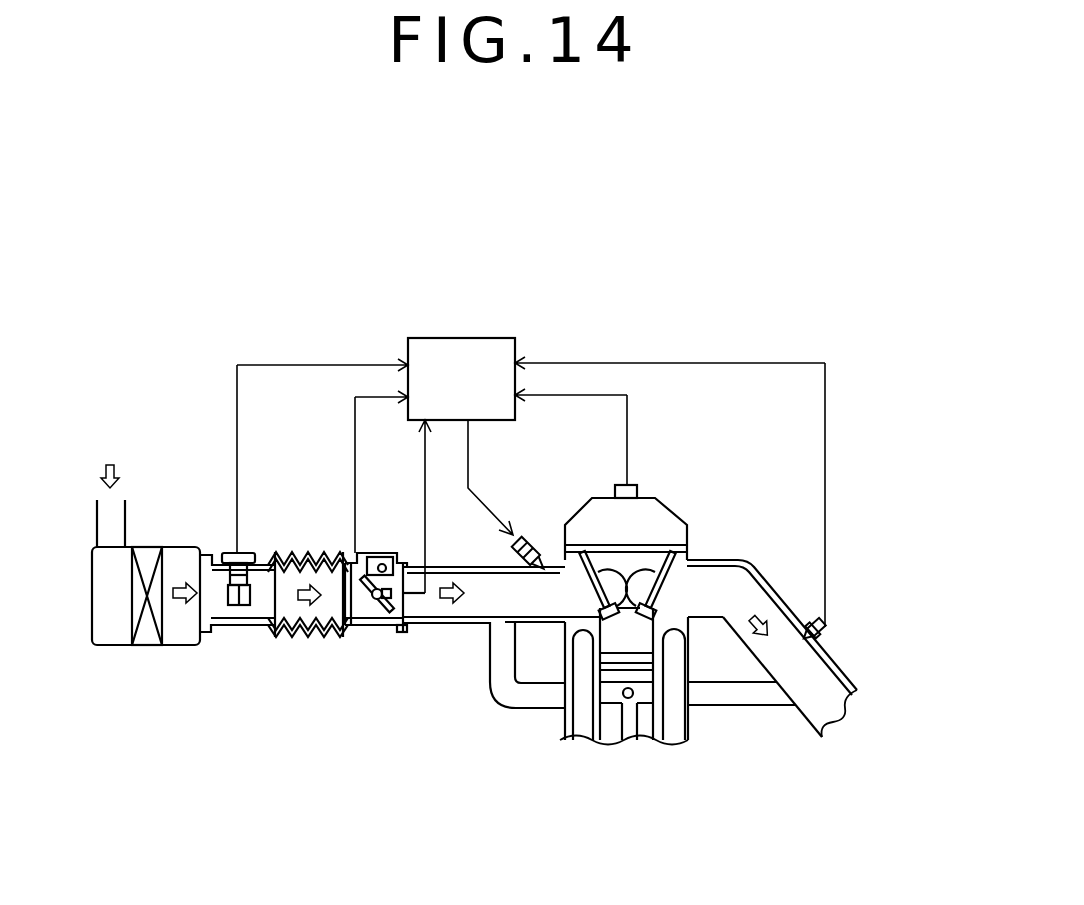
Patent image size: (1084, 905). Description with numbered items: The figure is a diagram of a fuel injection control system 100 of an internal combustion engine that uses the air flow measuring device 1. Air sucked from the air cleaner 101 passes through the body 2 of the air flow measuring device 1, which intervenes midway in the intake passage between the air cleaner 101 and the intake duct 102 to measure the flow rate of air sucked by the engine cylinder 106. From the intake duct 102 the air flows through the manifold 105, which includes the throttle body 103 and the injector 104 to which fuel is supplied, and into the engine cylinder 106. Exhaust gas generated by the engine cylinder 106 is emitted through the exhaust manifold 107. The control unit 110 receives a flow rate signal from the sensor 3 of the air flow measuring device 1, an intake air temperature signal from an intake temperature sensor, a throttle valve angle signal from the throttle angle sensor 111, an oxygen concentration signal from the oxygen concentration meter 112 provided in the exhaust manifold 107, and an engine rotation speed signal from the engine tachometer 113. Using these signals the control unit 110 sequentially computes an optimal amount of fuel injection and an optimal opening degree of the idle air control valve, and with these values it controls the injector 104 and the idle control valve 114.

The fuel injection control system 100 is at (657, 308).
The control unit 110 is at (455, 350).
The air cleaner 101 is at (113, 633).
The air flow measuring device 1 is at (248, 671).
The body 2 is at (233, 633).
The sensor 3 is at (257, 577).
The intake duct 102 is at (310, 636).
The throttle body 103 is at (404, 612).
The idle control valve 114 is at (387, 547).
The throttle angle sensor 111 is at (397, 596).
The manifold 105 is at (478, 597).
The injector 104 is at (530, 535).
The engine cylinder 106 is at (677, 600).
The engine tachometer 113 is at (633, 485).
The exhaust manifold 107 is at (818, 596).
The oxygen concentration meter 112 is at (825, 633).